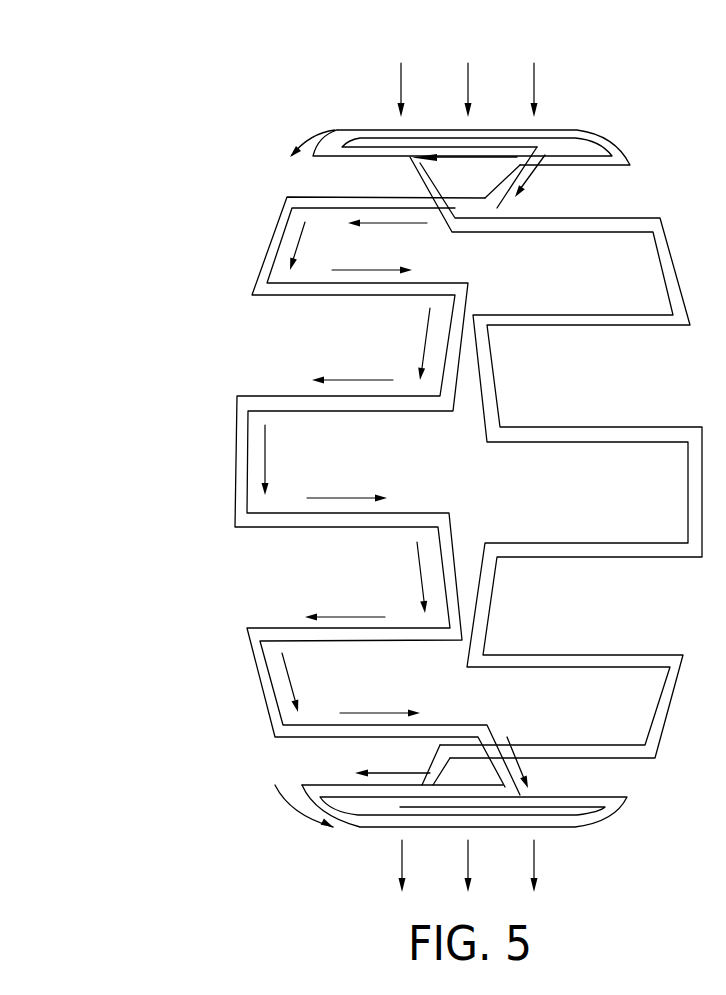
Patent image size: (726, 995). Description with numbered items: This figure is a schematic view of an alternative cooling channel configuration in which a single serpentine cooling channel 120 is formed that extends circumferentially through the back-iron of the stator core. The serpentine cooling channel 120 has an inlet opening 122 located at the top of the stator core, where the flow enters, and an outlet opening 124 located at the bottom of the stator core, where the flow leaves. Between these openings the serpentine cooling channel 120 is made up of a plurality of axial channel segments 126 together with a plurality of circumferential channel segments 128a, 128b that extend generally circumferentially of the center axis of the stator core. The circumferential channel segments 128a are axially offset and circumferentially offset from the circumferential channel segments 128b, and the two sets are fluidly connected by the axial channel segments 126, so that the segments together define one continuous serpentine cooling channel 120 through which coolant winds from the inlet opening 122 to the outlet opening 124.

The serpentine cooling channel 120 is at (620, 112).
The inlet opening 122 is at (392, 135).
The outlet opening 124 is at (548, 822).
The axial channel segments 126 is at (375, 290).
The circumferential channel segments 128a is at (270, 243).
The circumferential channel segments 128b is at (502, 183).